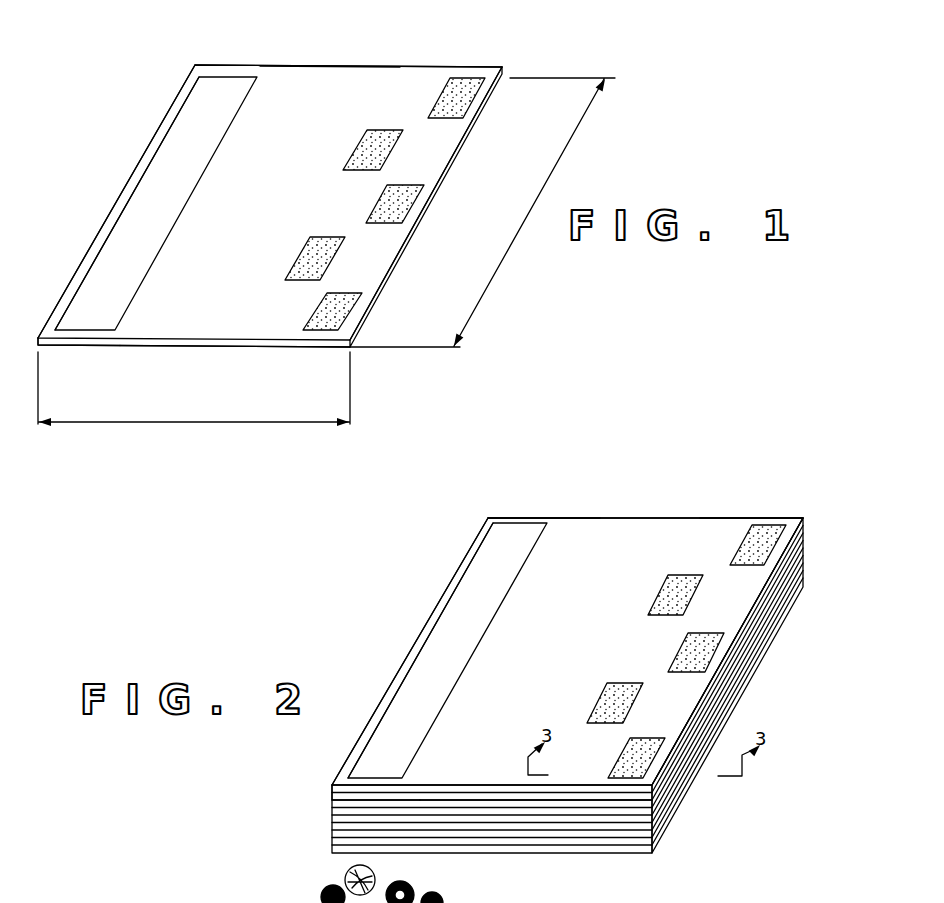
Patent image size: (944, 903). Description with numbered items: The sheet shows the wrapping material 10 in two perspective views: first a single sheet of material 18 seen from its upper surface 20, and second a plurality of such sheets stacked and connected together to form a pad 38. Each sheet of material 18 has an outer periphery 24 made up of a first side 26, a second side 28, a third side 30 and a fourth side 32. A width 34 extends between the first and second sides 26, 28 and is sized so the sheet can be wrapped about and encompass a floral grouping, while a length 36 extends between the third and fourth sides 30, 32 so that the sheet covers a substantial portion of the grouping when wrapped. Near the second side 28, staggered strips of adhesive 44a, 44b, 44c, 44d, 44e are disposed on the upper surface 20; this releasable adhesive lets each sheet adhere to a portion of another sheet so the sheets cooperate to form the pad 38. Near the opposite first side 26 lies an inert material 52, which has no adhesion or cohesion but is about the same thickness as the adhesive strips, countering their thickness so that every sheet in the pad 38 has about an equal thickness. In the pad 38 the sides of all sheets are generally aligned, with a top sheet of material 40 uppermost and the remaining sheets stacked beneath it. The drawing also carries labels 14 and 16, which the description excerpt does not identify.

In FIG. 1, the wrapping material 10 is at (369, 46).
In FIG. 2, the wrapping material 10 is at (620, 468).
In FIG. 2, the particles / sample material 14 is at (342, 880).
In FIG. 2, the laminated stack 16 is at (527, 825).
In FIG. 1, the sheet of material 18 is at (255, 63).
In FIG. 2, the sheet of material 18 is at (606, 512).
In FIG. 1, the upper surface 20 is at (238, 168).
In FIG. 2, the upper surface 20 is at (560, 543).
In FIG. 1, the outer periphery 24 is at (185, 348).
In FIG. 2, the outer periphery 24 is at (400, 793).
In FIG. 1, the first side 26 is at (134, 168).
In FIG. 2, the first side 26 is at (427, 622).
In FIG. 1, the second side 28 is at (471, 124).
In FIG. 2, the second side 28 is at (740, 665).
In FIG. 1, the third side 30 is at (285, 66).
In FIG. 2, the third side 30 is at (520, 518).
In FIG. 1, the fourth side 32 is at (88, 345).
In FIG. 2, the fourth side 32 is at (365, 793).
In FIG. 1, the width 34 is at (180, 424).
In FIG. 1, the length 36 is at (513, 250).
In FIG. 2, the pad of sheets of material 38 is at (672, 813).
In FIG. 2, the top sheet of material 40 is at (727, 518).
In FIG. 1, the staggered strip of adhesive 44a is at (468, 97).
In FIG. 2, the staggered strip of adhesive 44a is at (765, 535).
In FIG. 1, the staggered strip of adhesive 44b is at (378, 152).
In FIG. 2, the staggered strip of adhesive 44b is at (677, 595).
In FIG. 1, the staggered strip of adhesive 44c is at (400, 205).
In FIG. 2, the staggered strip of adhesive 44c is at (697, 653).
In FIG. 1, the staggered strip of adhesive 44d is at (318, 257).
In FIG. 2, the staggered strip of adhesive 44d is at (620, 712).
In FIG. 1, the staggered strip of adhesive 44e is at (338, 311).
In FIG. 2, the staggered strip of adhesive 44e is at (650, 762).
In FIG. 1, the inert material 52 is at (133, 240).
In FIG. 2, the inert material 52 is at (483, 572).